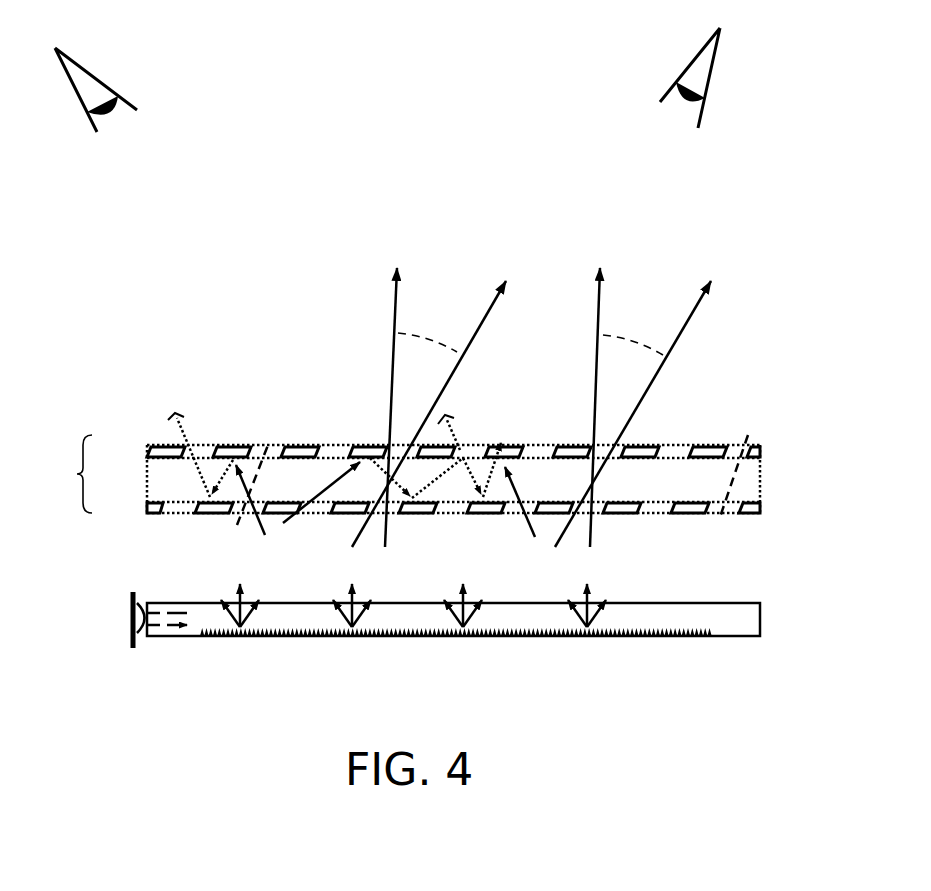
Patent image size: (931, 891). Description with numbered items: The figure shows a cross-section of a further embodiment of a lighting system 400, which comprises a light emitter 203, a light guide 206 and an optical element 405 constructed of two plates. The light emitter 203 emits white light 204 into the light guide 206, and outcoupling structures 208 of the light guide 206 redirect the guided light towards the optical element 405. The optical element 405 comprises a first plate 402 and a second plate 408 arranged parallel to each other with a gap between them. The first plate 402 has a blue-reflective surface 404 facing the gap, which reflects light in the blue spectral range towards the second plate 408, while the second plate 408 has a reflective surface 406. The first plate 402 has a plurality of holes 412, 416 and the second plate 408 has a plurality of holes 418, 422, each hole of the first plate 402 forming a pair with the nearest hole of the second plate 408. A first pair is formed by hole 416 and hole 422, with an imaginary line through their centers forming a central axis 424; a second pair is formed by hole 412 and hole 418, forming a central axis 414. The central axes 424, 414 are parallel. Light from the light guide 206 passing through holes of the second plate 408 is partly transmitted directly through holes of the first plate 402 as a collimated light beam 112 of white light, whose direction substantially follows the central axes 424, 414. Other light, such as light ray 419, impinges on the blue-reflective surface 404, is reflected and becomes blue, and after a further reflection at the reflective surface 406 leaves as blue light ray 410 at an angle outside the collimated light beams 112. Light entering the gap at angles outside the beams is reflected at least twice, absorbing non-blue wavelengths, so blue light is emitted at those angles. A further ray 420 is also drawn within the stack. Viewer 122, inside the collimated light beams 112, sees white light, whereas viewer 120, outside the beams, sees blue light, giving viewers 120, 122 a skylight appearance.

The viewer 120 is at (90, 73).
The viewer 122 is at (690, 63).
The collimated light beam 112 is at (432, 338).
The lighting system 400 is at (122, 689).
The first plate 402 is at (163, 448).
The blue-reflective surface 404 is at (140, 441).
The optical element 405 is at (394, 474).
The reflective surface 406 is at (141, 518).
The second plate 408 is at (202, 512).
The blue light ray 410 is at (187, 410).
The hole 412 is at (258, 447).
The central axis 414 is at (270, 445).
The hole 416 is at (735, 445).
The hole 418 is at (233, 515).
The light ray 419 is at (257, 527).
The light ray 420 is at (285, 523).
The hole 422 is at (712, 510).
The central axis 424 is at (721, 519).
The light emitter 203 is at (131, 618).
The white light 204 is at (163, 628).
The light guide 206 is at (507, 618).
The outcoupling structures 208 is at (563, 637).